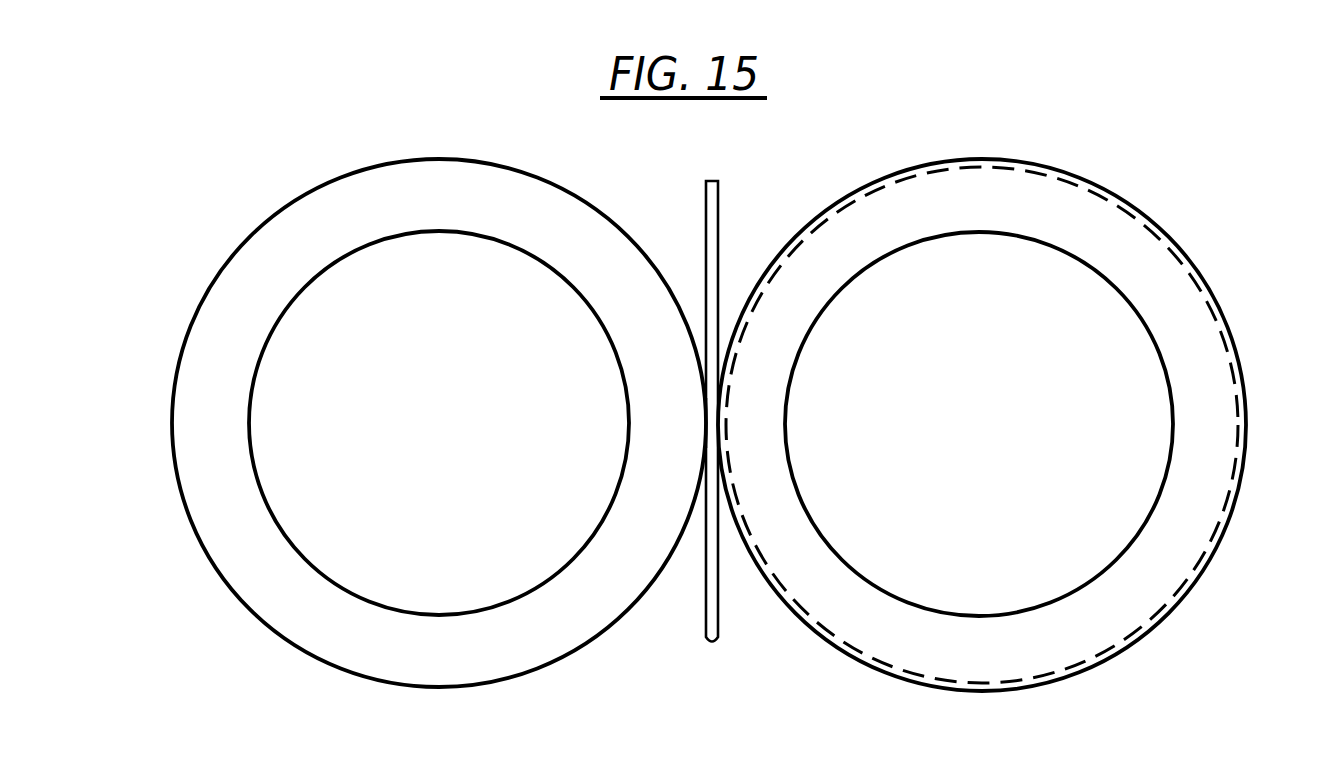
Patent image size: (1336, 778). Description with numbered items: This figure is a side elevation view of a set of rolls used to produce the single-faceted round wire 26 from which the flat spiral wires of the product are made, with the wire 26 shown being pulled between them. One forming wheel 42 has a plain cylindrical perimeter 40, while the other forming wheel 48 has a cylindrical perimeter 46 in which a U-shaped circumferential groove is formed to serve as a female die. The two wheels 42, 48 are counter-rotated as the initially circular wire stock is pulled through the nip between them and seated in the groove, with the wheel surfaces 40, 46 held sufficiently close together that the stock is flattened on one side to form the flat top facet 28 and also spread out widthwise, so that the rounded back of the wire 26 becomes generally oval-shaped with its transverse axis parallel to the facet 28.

The wire 26 is at (737, 608).
The flat top facet 28 is at (700, 612).
The cylindrical perimeter 40 is at (425, 685).
The forming wheel 42 is at (150, 573).
The cylindrical perimeter 46 is at (1240, 364).
The forming wheel 48 is at (1078, 636).